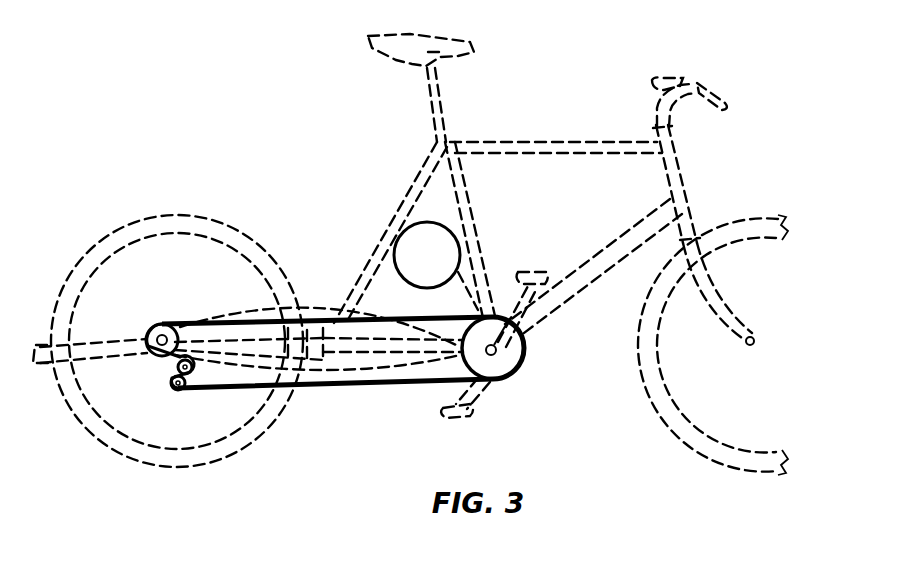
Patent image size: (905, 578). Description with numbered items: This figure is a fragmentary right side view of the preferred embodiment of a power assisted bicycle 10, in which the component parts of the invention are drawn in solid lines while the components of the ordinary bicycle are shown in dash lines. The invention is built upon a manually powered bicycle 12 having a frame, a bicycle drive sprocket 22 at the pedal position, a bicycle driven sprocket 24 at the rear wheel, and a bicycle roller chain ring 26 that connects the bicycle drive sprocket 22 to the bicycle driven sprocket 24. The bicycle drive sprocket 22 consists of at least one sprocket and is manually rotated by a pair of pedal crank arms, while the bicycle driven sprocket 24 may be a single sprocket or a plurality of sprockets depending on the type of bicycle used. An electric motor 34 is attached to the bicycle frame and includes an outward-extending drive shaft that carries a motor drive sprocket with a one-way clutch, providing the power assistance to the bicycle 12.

The power assisted bicycle 10 is at (198, 186).
The manually powered bicycle 12 is at (597, 140).
The bicycle drive sprocket 22 is at (518, 373).
The bicycle driven sprocket 24 is at (152, 357).
The bicycle roller chain ring 26 is at (392, 387).
The electric motor 34 is at (400, 229).